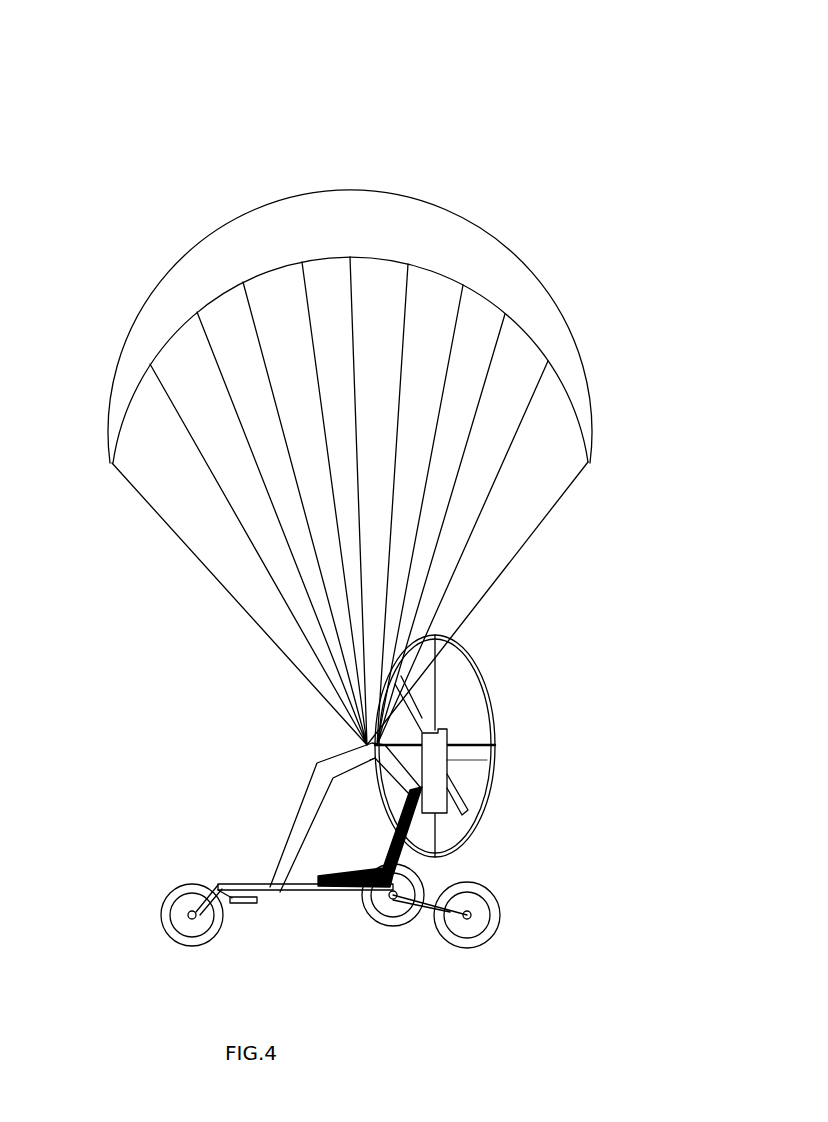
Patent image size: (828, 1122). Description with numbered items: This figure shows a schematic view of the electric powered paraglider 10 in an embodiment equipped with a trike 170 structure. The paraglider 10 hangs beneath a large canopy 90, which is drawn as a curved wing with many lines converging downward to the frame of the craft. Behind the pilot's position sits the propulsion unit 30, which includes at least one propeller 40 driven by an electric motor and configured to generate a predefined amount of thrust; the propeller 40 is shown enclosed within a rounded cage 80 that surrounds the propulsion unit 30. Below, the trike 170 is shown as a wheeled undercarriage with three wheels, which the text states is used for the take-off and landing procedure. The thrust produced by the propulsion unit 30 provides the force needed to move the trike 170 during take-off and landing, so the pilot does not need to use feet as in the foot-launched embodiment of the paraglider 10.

The electric powered paraglider 10 is at (414, 83).
The canopy wing 90 is at (527, 267).
The propeller guard cage 80 is at (475, 663).
The propulsion unit 30 is at (447, 758).
The propeller 40 is at (463, 813).
The trike 170 is at (238, 883).